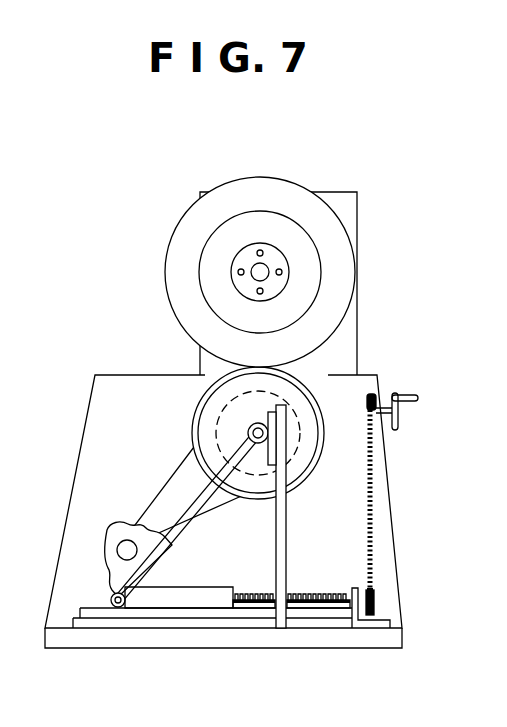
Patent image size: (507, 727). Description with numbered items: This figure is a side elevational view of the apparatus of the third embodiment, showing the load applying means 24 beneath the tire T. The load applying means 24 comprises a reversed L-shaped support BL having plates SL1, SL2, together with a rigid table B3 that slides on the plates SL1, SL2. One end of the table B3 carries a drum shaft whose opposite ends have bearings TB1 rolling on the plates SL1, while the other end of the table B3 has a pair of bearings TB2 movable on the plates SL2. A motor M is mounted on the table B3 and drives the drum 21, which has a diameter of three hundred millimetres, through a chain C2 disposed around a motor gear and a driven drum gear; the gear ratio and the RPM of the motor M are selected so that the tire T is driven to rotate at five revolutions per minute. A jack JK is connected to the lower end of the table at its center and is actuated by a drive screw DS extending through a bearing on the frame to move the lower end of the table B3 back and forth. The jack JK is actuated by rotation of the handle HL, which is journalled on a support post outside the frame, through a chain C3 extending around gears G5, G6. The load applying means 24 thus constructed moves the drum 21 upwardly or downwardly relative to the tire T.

The tire T is at (283, 197).
The load applying means 24 is at (420, 541).
The drum 21 is at (284, 486).
The chain C2 is at (141, 520).
The motor M is at (112, 537).
The rigid table B3 is at (170, 538).
The bearings TB1 is at (258, 444).
The bearings TB2 is at (118, 608).
The jack JK is at (215, 600).
The drive screw DS is at (318, 593).
The plates SL2 is at (170, 613).
The reversed L-shaped support BL is at (263, 620).
The plates SL1 is at (277, 452).
The chain C3 is at (375, 522).
The gear G6 is at (376, 397).
The handle HL is at (398, 414).
The gear G5 is at (374, 600).